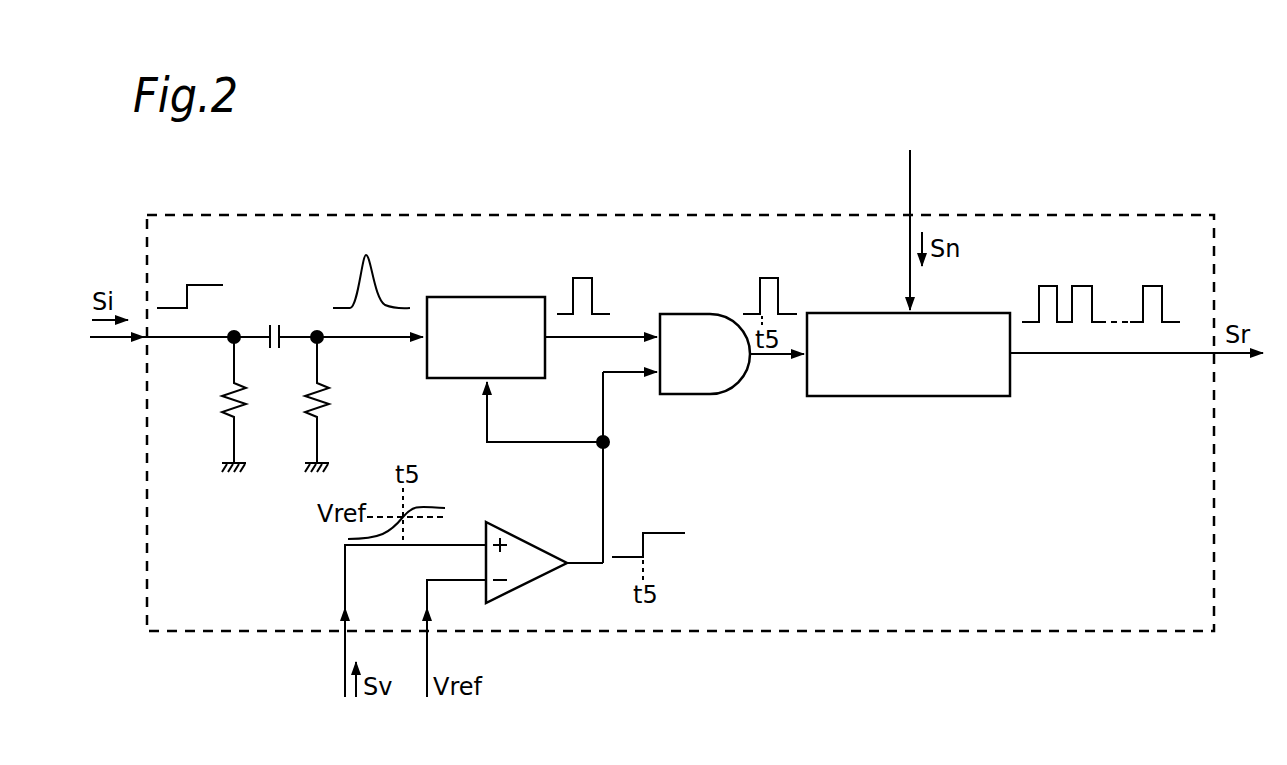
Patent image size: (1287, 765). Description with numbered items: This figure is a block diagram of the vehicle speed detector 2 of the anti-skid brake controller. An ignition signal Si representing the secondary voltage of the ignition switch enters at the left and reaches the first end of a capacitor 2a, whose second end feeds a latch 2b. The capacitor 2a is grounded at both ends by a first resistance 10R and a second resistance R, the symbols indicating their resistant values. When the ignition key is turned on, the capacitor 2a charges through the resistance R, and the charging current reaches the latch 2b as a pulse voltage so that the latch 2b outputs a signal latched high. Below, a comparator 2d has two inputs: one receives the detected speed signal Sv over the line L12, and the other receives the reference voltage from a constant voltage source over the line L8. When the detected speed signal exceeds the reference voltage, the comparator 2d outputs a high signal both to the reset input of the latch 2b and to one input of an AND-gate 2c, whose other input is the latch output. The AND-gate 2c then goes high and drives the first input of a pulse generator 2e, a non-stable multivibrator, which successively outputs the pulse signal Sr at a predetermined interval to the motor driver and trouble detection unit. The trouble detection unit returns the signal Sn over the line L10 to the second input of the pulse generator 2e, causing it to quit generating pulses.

The vehicle speed detector 2 is at (795, 215).
The capacitor 2a is at (272, 325).
The latch 2b is at (497, 297).
The AND-gate 2c is at (738, 385).
The comparator 2d is at (530, 584).
The pulse generator 2e is at (965, 397).
The first resistance 10R is at (225, 394).
The second resistance R is at (330, 391).
The line L10 is at (910, 172).
The line L12 is at (343, 653).
The line L8 is at (427, 655).